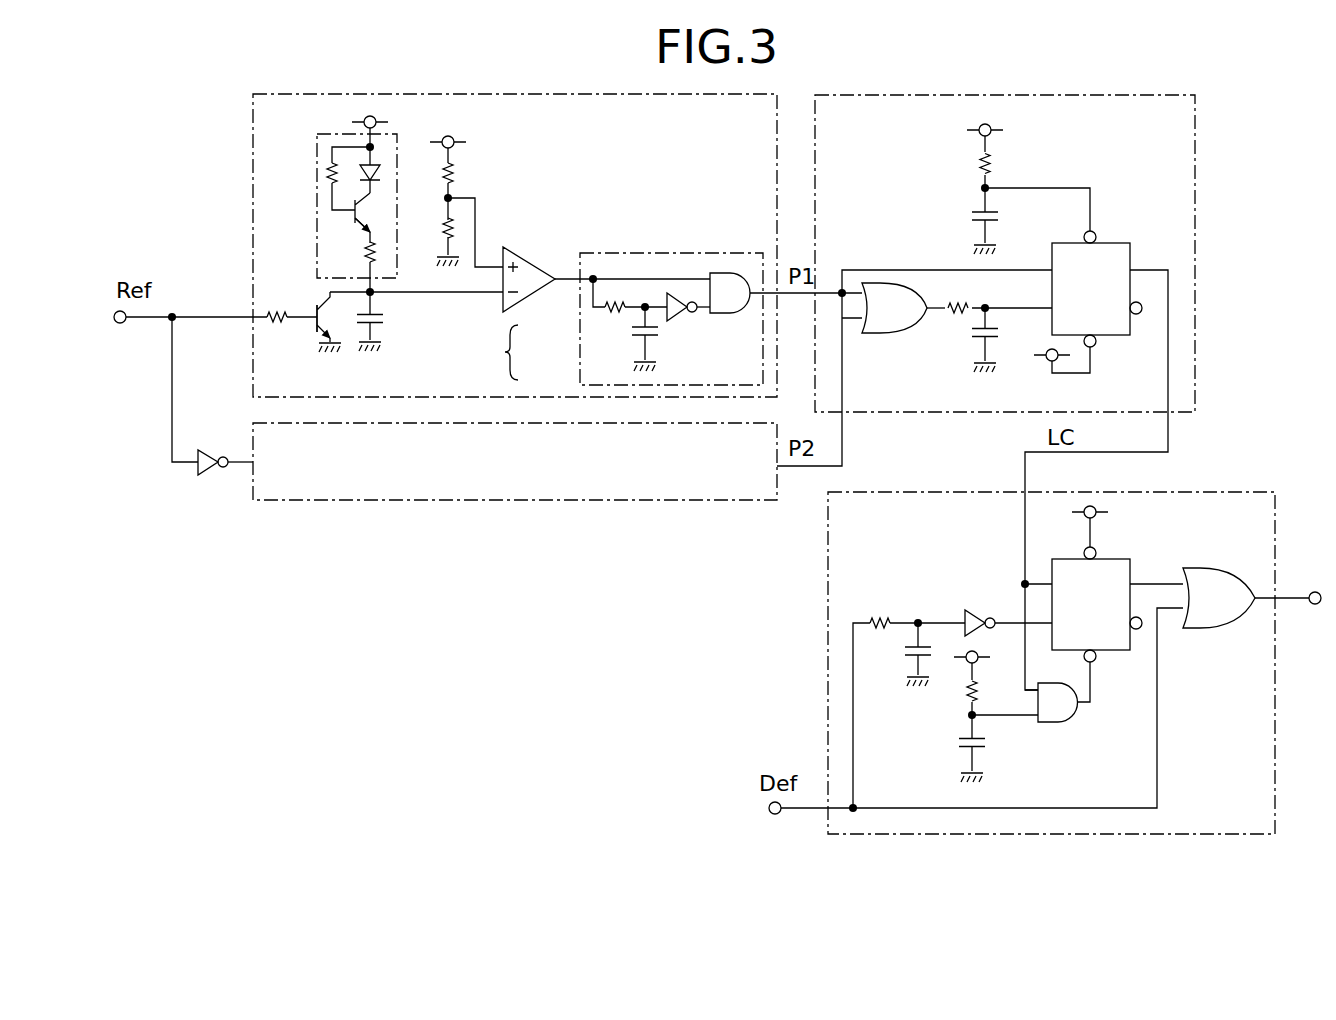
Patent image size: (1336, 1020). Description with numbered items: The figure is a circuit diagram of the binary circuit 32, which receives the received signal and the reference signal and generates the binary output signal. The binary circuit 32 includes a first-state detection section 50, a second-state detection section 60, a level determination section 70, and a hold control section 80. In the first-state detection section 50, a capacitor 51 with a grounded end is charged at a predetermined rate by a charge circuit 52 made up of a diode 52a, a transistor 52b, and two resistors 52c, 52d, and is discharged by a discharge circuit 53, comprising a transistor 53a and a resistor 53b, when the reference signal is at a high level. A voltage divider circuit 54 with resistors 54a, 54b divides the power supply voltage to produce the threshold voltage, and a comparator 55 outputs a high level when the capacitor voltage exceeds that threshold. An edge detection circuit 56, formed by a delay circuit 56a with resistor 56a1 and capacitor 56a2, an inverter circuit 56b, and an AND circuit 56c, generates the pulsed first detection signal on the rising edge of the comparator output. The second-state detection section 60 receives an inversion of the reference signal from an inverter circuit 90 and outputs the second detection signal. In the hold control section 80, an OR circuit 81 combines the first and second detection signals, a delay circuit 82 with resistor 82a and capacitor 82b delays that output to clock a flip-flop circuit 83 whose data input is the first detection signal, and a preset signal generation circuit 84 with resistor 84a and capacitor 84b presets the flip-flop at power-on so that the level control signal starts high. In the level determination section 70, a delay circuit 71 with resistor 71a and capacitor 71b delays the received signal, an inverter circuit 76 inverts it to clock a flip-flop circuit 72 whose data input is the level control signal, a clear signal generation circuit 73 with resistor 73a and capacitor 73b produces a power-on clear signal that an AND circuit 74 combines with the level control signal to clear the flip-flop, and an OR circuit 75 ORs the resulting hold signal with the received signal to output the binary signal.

The binary circuit 32 is at (398, 707).
The first-state detection section 50 is at (288, 94).
The capacitor 51 is at (380, 325).
The charge circuit 52 is at (316, 154).
The diode 52a is at (381, 172).
The transistor 52b is at (374, 208).
The resistor 52c is at (328, 174).
The resistor 52d is at (365, 252).
The discharge circuit 53 is at (296, 300).
The transistor 53a is at (313, 330).
The resistor 53b is at (285, 322).
The voltage divider circuit 54 is at (478, 162).
The resistor 54a is at (458, 172).
The resistor 54b is at (446, 222).
The comparator 55 is at (529, 249).
The edge detection circuit 56 is at (607, 253).
The delay circuit 56a is at (490, 352).
The resistor 56a1 is at (618, 314).
The capacitor 56a2 is at (637, 342).
The inverter circuit 56b is at (681, 312).
The AND circuit 56c is at (728, 273).
The second-state detection section 60 is at (265, 500).
The level determination section 70 is at (1230, 492).
The delay circuit 71 is at (909, 596).
The resistor 71a is at (882, 618).
The capacitor 71b is at (912, 657).
The flip-flop circuit 72 is at (1118, 559).
The clear signal generation circuit 73 is at (945, 724).
The resistor 73a is at (980, 692).
The capacitor 73b is at (990, 744).
The AND circuit 74 is at (1050, 722).
The OR circuit 75 is at (1203, 628).
The inverter circuit 76 is at (977, 611).
The hold control section 80 is at (855, 95).
The OR circuit 81 is at (873, 333).
The delay circuit 82 is at (963, 344).
The resistor 82a is at (957, 314).
The capacitor 82b is at (1002, 337).
The flip-flop circuit 83 is at (1116, 243).
The preset signal generation circuit 84 is at (955, 154).
The resistor 84a is at (992, 164).
The capacitor 84b is at (975, 214).
The inverter circuit 90 is at (228, 443).